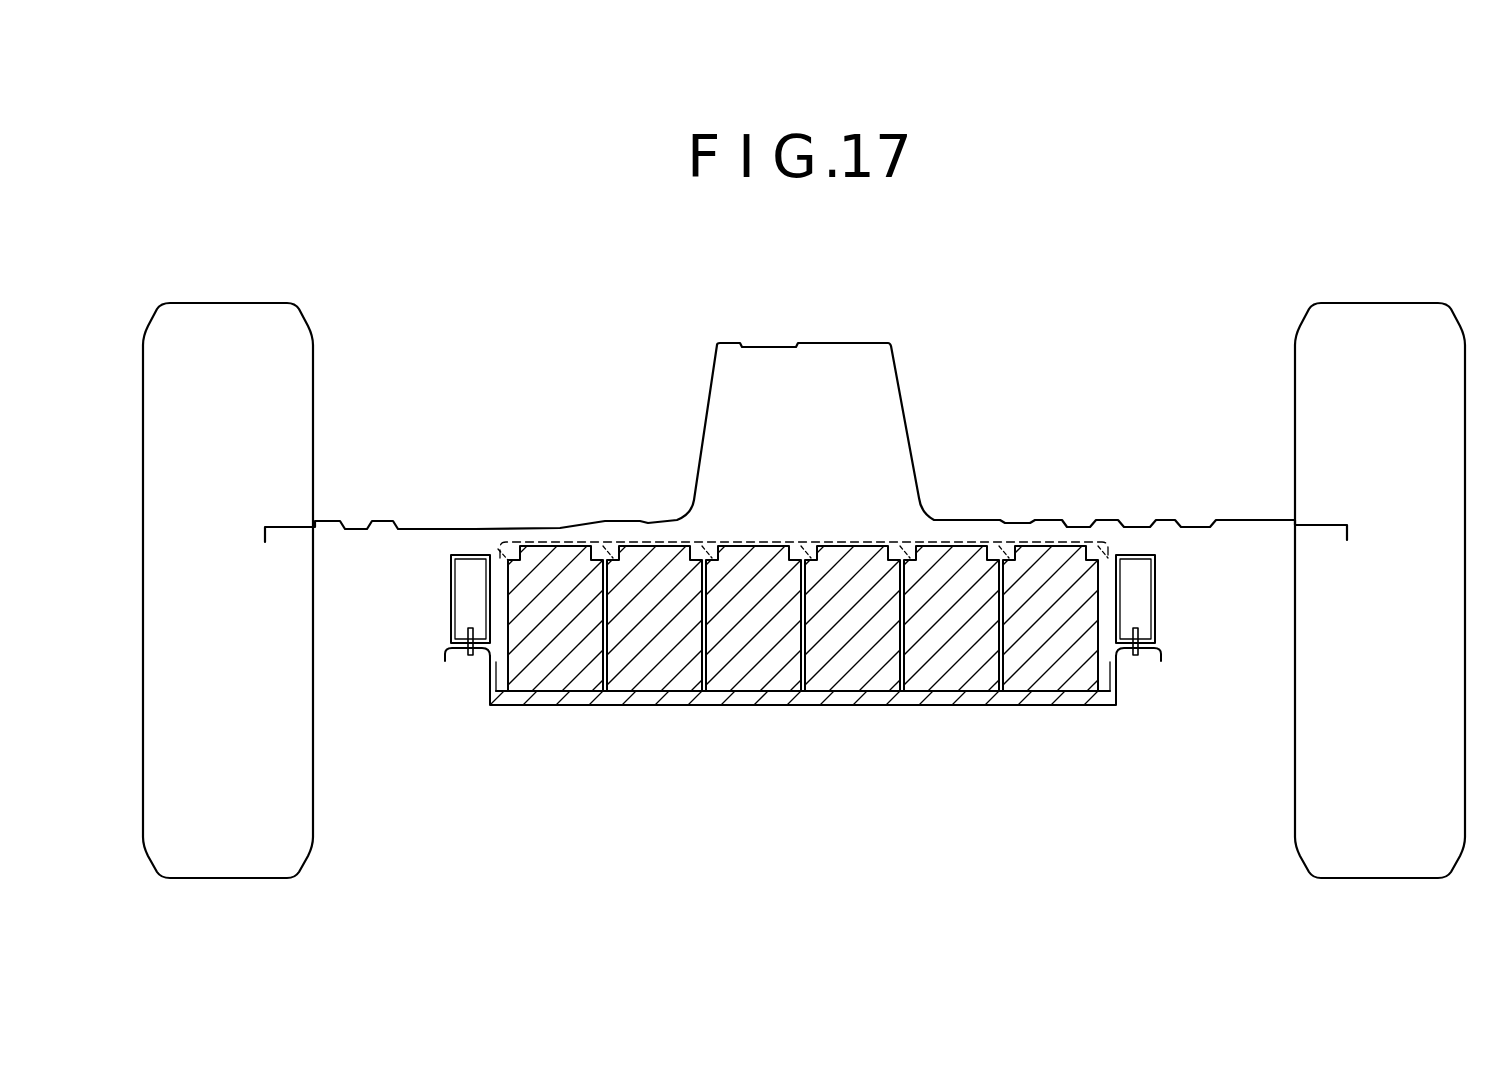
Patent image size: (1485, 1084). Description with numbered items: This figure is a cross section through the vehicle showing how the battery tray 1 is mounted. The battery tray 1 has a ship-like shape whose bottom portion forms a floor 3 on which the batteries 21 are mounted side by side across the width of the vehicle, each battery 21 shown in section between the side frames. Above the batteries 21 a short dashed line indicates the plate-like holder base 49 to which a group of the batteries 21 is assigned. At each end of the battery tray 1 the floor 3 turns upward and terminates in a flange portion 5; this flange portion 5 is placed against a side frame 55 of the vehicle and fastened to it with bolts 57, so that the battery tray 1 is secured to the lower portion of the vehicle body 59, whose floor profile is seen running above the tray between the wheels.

The battery tray 1 is at (752, 710).
The floor 3 is at (845, 705).
The flange portion 5 is at (447, 656).
The battery 21 is at (950, 660).
The holder base 49 is at (658, 543).
The side frame 55 is at (467, 602).
The bolt 57 is at (470, 657).
The vehicle body 59 is at (1247, 520).